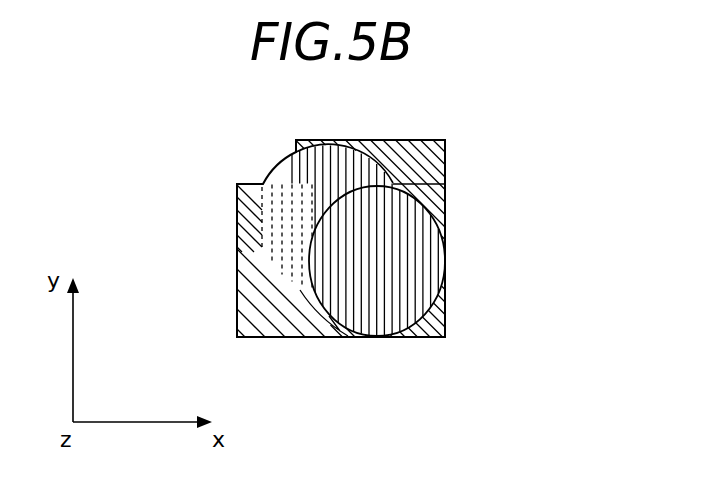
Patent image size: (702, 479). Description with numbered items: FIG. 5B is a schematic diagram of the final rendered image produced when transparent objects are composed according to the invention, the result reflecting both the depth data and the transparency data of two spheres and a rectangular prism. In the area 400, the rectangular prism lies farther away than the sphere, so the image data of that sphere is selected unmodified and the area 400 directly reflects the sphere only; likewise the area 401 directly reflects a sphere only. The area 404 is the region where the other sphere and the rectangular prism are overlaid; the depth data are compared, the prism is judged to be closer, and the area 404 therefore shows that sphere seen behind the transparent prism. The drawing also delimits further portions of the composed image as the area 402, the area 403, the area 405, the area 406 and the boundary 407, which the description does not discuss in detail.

The area 400 is at (420, 263).
The area 401 is at (285, 170).
The lower left region 402 is at (241, 311).
The upper region 403 is at (420, 165).
The area 404 is at (244, 235).
The boundary region 405 is at (323, 318).
The lower right region 406 is at (446, 330).
The boundary line 407 is at (432, 212).